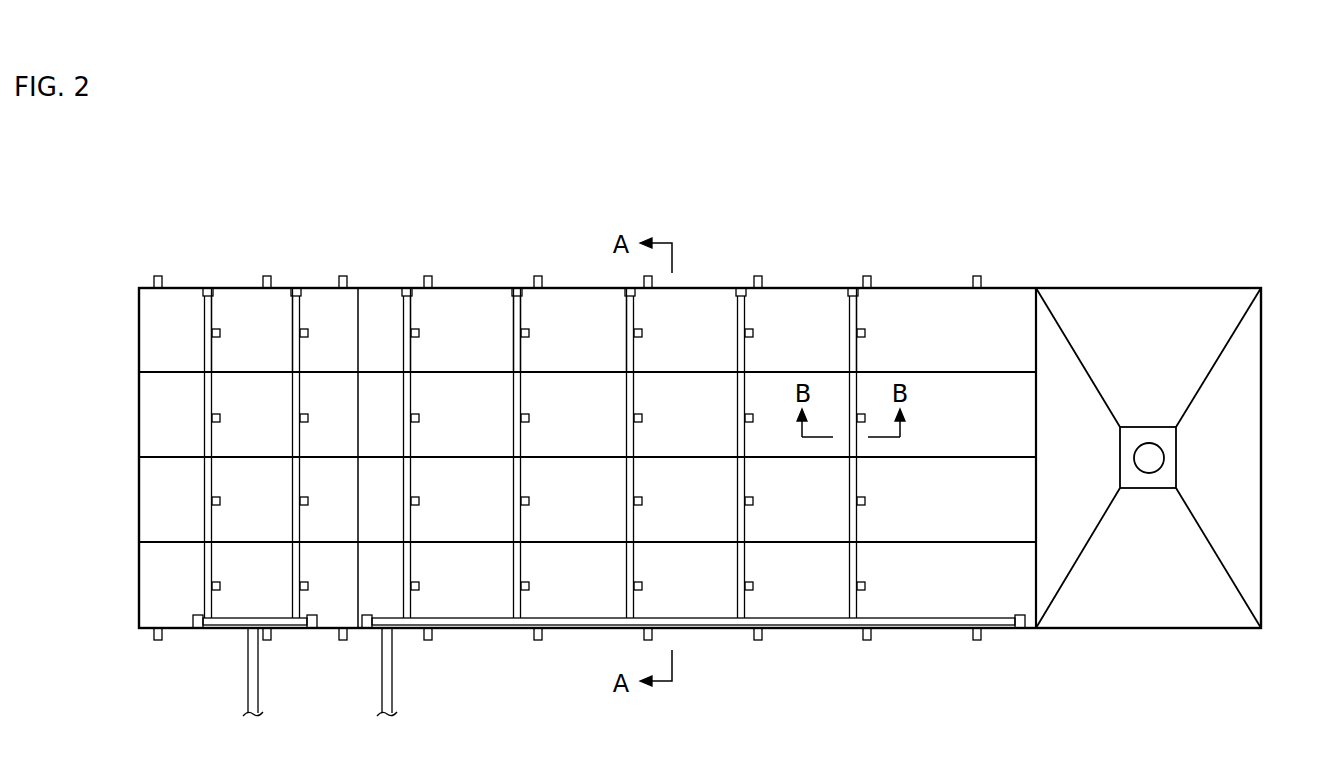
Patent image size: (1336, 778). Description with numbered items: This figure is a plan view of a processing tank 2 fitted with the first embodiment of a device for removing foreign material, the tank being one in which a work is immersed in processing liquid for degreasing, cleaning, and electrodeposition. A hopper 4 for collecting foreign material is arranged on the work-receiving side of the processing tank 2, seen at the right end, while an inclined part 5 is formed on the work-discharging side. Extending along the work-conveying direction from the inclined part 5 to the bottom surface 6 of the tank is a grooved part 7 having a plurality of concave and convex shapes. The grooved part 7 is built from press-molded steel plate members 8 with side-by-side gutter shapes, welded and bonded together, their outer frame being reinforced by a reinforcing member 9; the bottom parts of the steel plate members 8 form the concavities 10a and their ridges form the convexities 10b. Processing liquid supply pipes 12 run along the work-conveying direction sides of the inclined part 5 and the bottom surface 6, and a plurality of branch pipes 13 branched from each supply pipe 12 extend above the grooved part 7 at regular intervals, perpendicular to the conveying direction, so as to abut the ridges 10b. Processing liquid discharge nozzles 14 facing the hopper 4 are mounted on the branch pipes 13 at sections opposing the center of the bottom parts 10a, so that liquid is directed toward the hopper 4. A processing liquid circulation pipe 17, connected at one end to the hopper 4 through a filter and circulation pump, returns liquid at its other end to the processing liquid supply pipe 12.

The processing tank 2 is at (996, 256).
The hopper 4 is at (1258, 450).
The inclined part 5 is at (245, 296).
The bottom surface 6 is at (547, 305).
The grooved part 7 is at (450, 314).
The steel plate member 8 is at (922, 310).
The reinforcing member 9 is at (759, 642).
The concavity 10a is at (716, 424).
The convexity 10b is at (660, 372).
The processing liquid supply pipe 12 is at (220, 624).
The branch pipe 13 is at (212, 478).
The processing liquid discharge nozzle 14 is at (220, 417).
The processing liquid circulation pipe 17 is at (258, 665).